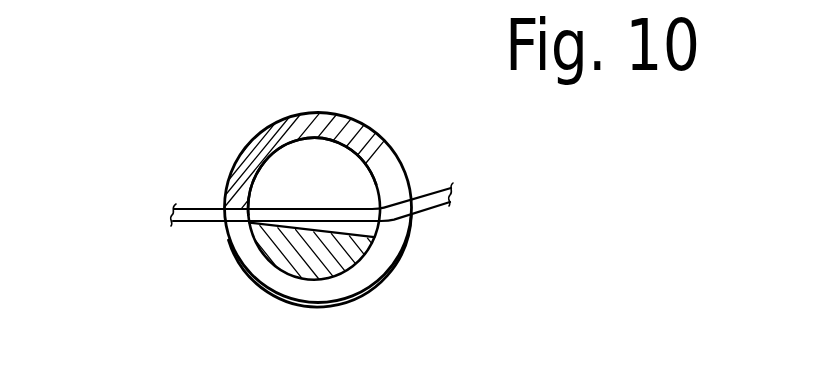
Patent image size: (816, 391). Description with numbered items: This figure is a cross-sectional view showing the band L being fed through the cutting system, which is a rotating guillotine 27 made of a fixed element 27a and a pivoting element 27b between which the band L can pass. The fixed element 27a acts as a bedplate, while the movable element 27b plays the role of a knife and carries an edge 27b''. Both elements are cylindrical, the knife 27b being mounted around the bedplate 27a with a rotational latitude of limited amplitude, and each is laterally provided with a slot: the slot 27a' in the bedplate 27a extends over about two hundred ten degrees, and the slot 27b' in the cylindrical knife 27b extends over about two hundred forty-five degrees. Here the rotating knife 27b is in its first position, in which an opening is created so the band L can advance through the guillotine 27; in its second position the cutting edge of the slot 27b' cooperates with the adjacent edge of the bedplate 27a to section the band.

The rotating guillotine 27 is at (370, 114).
The pivoting element 27b is at (283, 120).
The fixed element 27a is at (264, 262).
The slot 27a' is at (253, 148).
The slot 27b' is at (320, 285).
The edge 27b'' is at (156, 204).
The band L is at (358, 208).